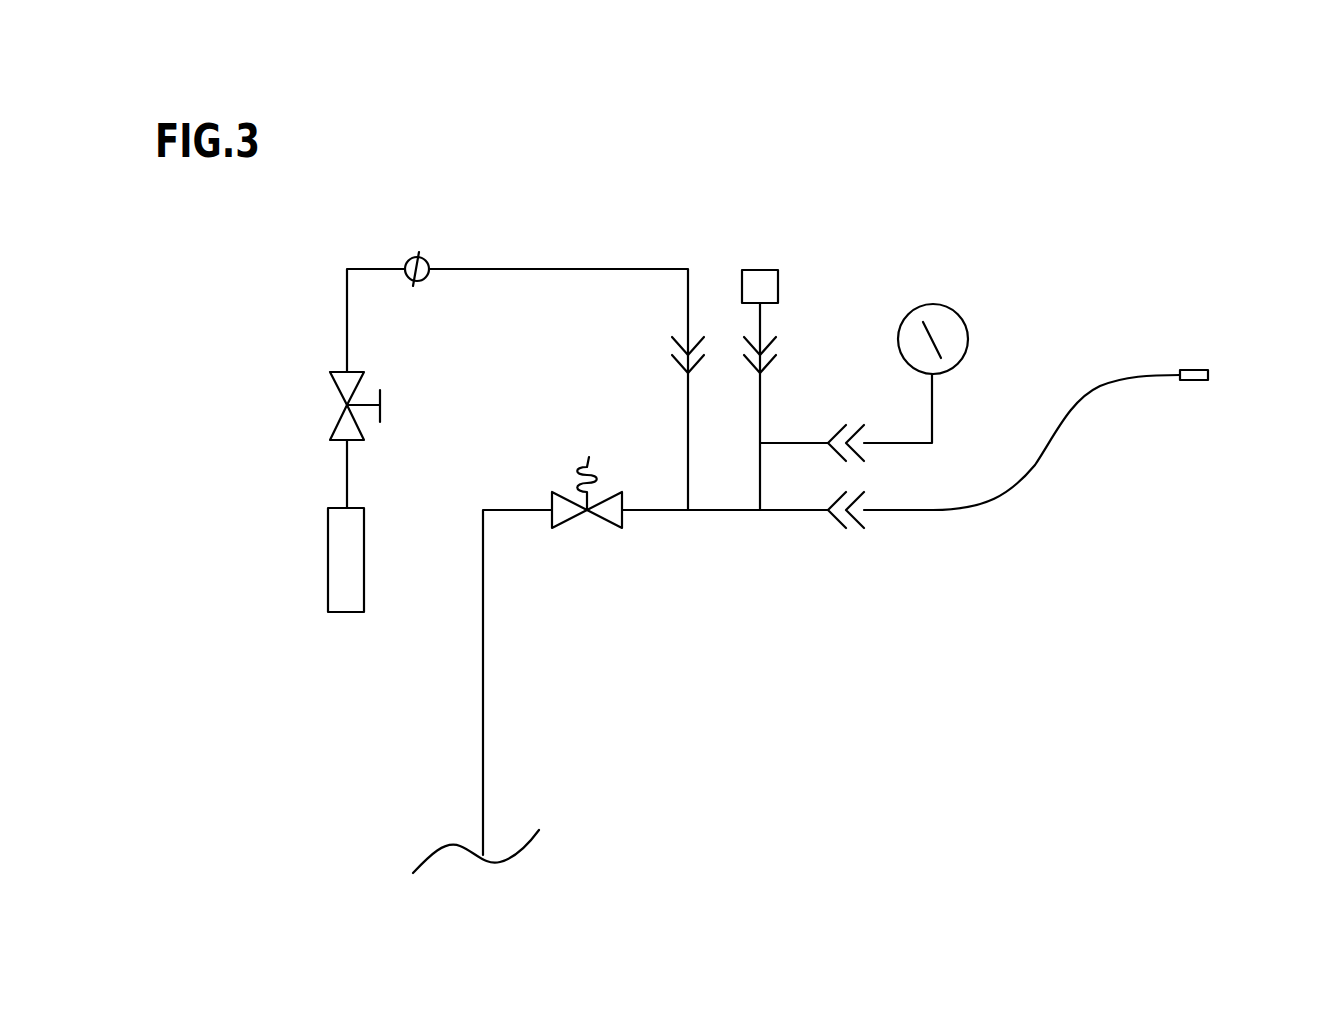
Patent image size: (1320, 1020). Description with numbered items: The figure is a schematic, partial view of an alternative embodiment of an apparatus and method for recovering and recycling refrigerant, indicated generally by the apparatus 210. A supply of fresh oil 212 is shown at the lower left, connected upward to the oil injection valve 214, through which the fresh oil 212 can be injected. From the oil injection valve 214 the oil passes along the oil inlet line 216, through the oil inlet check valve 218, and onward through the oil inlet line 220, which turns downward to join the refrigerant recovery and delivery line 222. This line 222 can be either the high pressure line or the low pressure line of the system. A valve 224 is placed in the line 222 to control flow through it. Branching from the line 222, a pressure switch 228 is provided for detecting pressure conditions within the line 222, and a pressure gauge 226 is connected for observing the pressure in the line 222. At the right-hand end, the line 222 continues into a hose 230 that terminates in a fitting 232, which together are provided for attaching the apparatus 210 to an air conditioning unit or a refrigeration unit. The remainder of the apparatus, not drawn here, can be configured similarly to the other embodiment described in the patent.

The apparatus and method for recovering and recycling refrigerant 210 is at (1112, 242).
The fresh oil 212 is at (330, 560).
The oil injection valve 214 is at (332, 439).
The oil inlet line 216 is at (365, 268).
The oil inlet check valve 218 is at (412, 257).
The oil inlet line 220 is at (583, 268).
The refrigerant recovery and delivery line 222 is at (662, 510).
The valve 224 is at (622, 528).
The pressure gauge 226 is at (948, 307).
The pressure switch 228 is at (762, 270).
The hose 230 is at (1042, 457).
The fitting 232 is at (1195, 382).